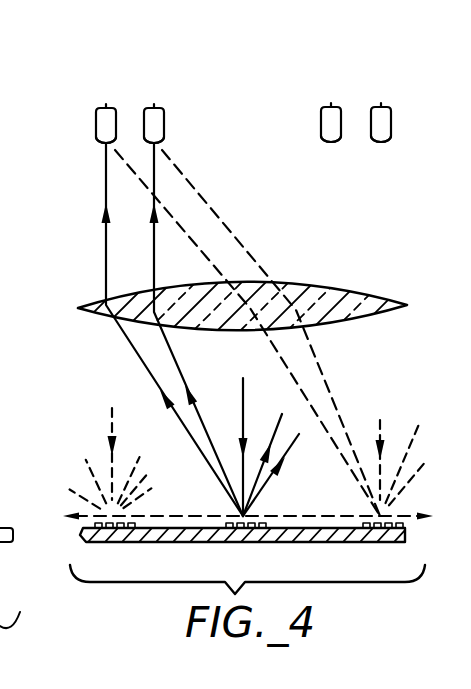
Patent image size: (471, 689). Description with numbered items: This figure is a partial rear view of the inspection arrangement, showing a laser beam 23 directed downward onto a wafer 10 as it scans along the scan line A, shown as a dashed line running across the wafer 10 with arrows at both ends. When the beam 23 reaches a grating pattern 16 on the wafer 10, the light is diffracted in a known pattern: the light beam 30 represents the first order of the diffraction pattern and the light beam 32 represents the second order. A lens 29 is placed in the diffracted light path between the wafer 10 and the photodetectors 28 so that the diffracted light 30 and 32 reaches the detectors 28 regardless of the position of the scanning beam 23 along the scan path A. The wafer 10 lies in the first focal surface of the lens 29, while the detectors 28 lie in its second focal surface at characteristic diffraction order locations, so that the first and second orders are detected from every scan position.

The wafer 10 is at (85, 537).
The grating pattern 16 is at (228, 516).
The laser beam 23 is at (241, 426).
The photodetectors 28 is at (103, 107).
The lens 29 is at (313, 283).
The light beam 30 is at (164, 336).
The light beam 32 is at (142, 363).
The scan line A is at (85, 498).